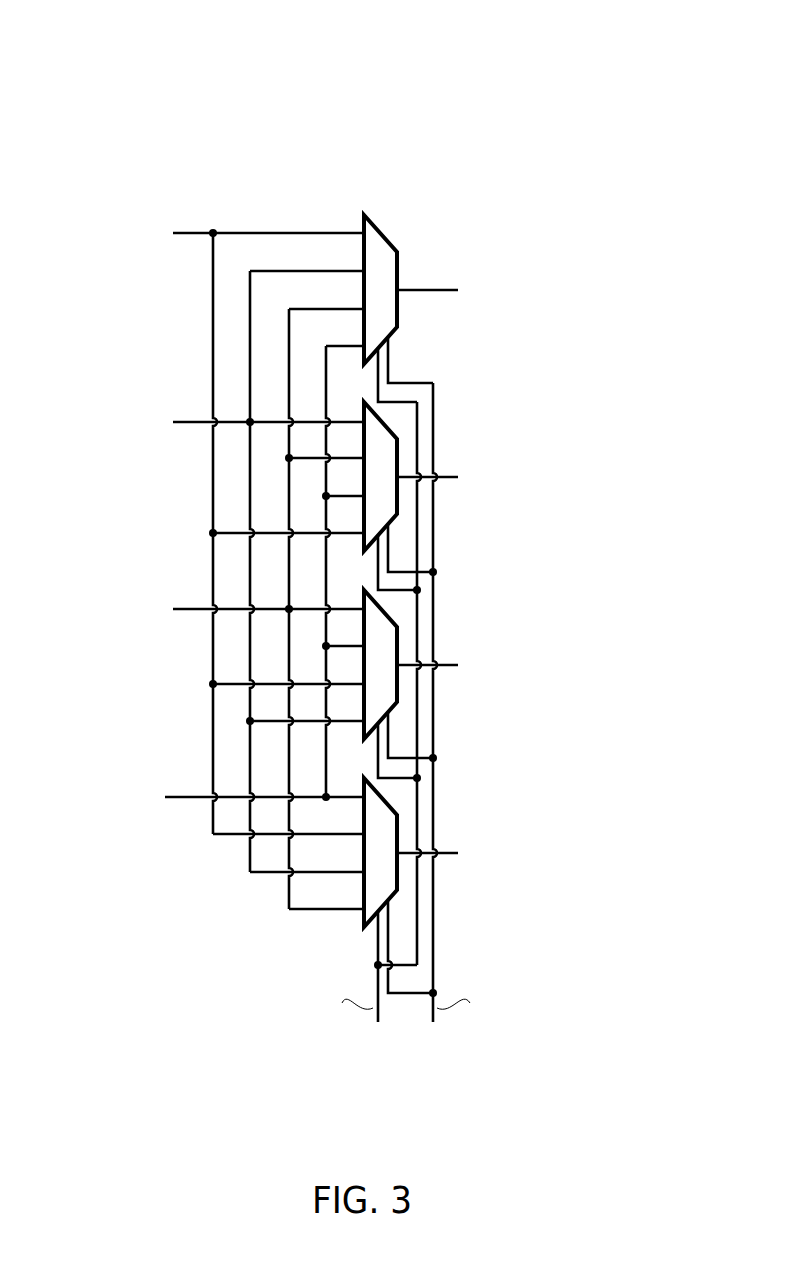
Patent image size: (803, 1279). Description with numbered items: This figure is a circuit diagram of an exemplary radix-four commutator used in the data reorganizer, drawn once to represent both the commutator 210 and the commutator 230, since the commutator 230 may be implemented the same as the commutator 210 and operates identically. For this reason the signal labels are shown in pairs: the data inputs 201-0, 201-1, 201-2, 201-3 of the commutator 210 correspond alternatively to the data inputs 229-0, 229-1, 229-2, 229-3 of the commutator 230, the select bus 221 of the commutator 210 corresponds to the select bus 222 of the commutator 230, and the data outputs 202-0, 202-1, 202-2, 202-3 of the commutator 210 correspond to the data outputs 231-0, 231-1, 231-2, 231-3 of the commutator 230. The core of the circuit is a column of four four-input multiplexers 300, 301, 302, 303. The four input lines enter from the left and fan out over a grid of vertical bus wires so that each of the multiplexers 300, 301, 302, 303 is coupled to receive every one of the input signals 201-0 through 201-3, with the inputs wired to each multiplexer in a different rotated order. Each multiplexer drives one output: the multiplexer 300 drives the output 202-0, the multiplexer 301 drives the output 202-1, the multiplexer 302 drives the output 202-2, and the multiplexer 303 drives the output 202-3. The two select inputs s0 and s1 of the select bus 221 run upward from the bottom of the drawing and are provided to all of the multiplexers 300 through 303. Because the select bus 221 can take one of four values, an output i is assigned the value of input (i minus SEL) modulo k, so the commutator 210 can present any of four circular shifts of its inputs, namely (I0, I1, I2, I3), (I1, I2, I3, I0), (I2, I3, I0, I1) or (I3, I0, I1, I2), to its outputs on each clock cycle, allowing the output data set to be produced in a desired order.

The commutator 210 is at (350, 554).
The commutator 230 is at (526, 51).
The data input 201-0 is at (221, 206).
The data input 229-0 is at (173, 233).
The data input 201-1 is at (221, 395).
The data input 229-1 is at (173, 422).
The data input 201-2 is at (221, 582).
The data input 229-2 is at (173, 609).
The data input 201-3 is at (221, 770).
The data input 229-3 is at (165, 797).
The data output 202-0 is at (482, 260).
The data output 231-0 is at (458, 290).
The data output 202-1 is at (482, 448).
The data output 231-1 is at (458, 477).
The data output 202-2 is at (482, 636).
The data output 231-2 is at (458, 665).
The data output 202-3 is at (482, 823).
The data output 231-3 is at (458, 853).
The multiplexer 300 is at (364, 362).
The multiplexer 301 is at (364, 550).
The multiplexer 302 is at (364, 738).
The multiplexer 303 is at (364, 927).
The select bus 221 is at (407, 721).
The select bus 222 is at (440, 1026).